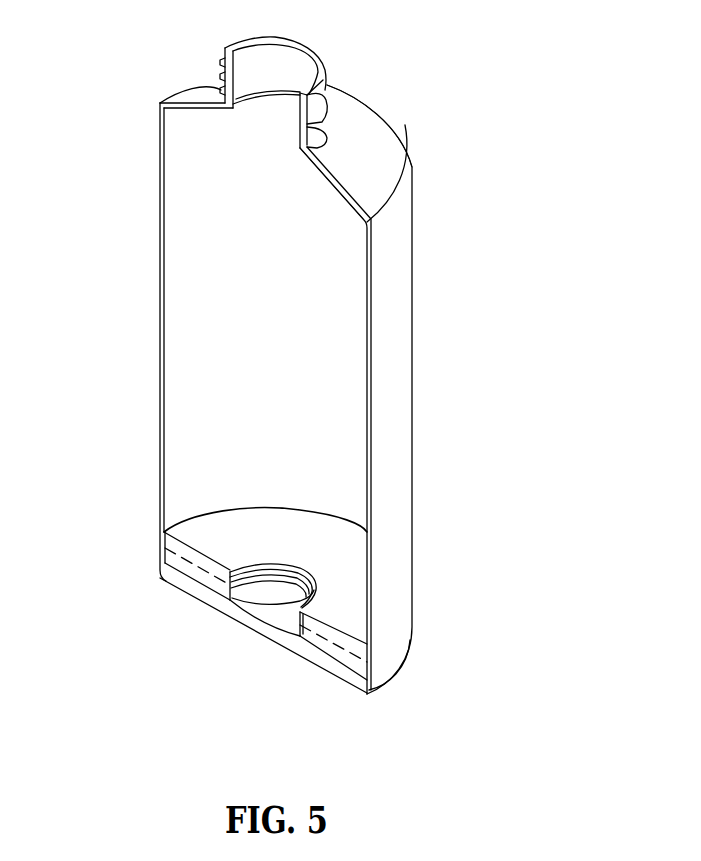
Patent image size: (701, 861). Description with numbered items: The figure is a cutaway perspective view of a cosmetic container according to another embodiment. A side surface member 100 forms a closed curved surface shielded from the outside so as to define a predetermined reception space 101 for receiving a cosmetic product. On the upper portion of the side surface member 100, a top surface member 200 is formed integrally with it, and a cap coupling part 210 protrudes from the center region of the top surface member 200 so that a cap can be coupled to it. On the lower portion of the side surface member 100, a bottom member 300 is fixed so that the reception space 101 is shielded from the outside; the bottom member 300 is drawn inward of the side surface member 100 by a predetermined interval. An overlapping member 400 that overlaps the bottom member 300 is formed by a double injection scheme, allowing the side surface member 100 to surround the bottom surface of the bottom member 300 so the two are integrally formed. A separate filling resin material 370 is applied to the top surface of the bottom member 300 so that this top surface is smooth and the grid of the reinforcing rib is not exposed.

The side surface member 100 is at (393, 378).
The reception space 101 is at (219, 332).
The top surface member 200 is at (368, 142).
The cap coupling part 210 is at (303, 45).
The bottom member 300 is at (335, 657).
The filling resin material 370 is at (343, 643).
The overlapping member 400 is at (217, 603).